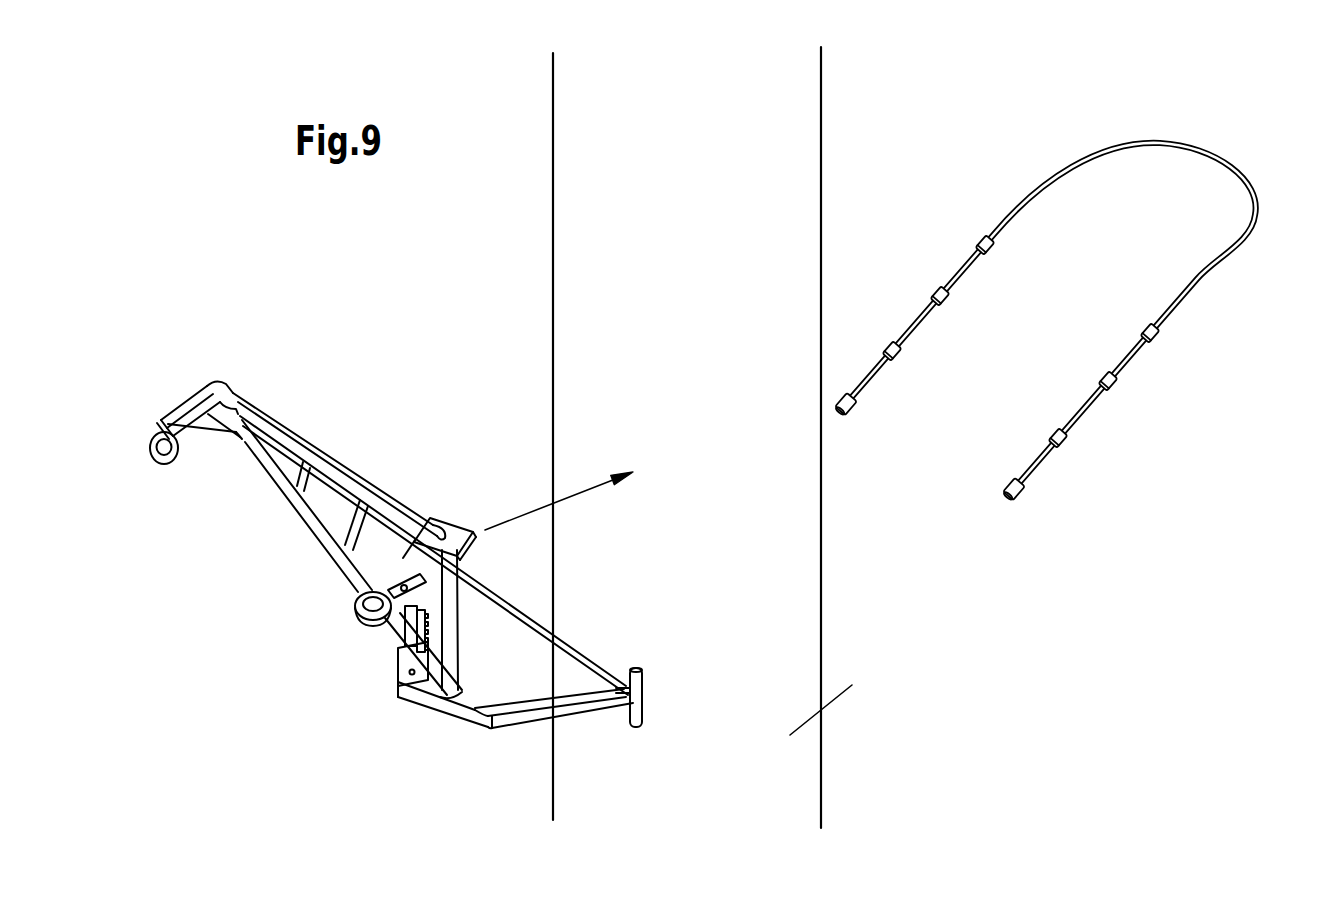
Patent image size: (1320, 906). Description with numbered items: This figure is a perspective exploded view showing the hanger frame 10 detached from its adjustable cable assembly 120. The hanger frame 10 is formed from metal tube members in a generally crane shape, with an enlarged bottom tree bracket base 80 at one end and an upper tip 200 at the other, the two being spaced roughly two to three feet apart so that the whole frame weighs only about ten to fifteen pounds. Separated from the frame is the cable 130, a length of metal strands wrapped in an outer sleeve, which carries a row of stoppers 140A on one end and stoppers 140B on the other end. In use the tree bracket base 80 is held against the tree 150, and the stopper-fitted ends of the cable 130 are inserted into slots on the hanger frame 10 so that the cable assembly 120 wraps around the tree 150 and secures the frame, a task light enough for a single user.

The hanger frame 10 is at (229, 296).
The tree bracket base 80 is at (805, 652).
The adjustable cable assembly 120 is at (1075, 266).
The cable 130 is at (1064, 317).
The stopper 140A is at (1107, 412).
The stopper 140B is at (914, 302).
The tree 150 is at (852, 685).
The upper tip 200 is at (600, 138).